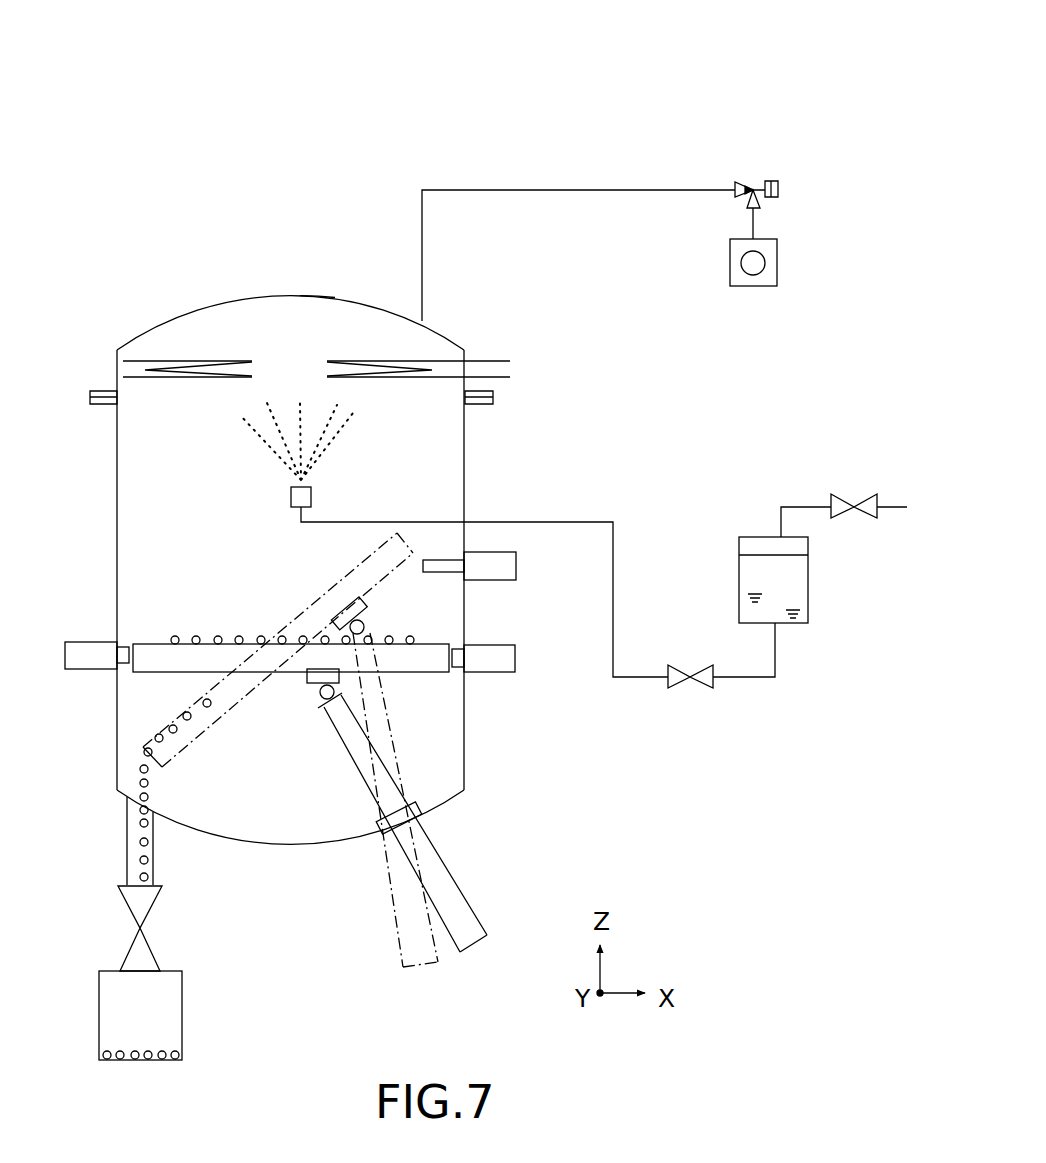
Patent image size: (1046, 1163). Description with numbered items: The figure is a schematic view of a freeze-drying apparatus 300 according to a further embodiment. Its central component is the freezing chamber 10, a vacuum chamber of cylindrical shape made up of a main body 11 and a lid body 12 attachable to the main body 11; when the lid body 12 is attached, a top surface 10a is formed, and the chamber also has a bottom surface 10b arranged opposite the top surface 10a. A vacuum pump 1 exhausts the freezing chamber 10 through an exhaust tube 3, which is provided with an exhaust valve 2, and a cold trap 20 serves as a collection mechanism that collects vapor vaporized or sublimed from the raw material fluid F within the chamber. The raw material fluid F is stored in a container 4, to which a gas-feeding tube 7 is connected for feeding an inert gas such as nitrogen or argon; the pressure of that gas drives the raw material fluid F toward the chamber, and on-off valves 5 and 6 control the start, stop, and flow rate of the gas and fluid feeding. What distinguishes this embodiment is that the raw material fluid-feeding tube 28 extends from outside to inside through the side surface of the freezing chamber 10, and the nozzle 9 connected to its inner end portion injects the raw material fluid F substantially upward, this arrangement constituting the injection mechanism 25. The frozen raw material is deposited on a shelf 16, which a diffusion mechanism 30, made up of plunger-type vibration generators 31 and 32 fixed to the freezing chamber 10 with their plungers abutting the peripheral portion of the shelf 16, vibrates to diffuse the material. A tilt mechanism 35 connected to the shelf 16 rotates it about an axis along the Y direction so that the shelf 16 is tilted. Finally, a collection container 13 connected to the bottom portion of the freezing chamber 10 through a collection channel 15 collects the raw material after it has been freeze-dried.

The freeze-drying apparatus 300 is at (368, 80).
The freezing chamber 10 is at (110, 572).
The top surface 10a is at (250, 296).
The bottom surface 10b is at (273, 844).
The main body 11 is at (117, 608).
The lid body 12 is at (333, 295).
The cold trap 20 is at (480, 352).
The exhaust valve 2 is at (403, 360).
The exhaust tube 3 is at (575, 190).
The vacuum pump 1 is at (737, 287).
The nozzle 9 is at (291, 497).
The injection mechanism 25 is at (362, 481).
The raw material fluid-feeding tube 28 is at (568, 522).
The on-off valve 6 is at (672, 688).
The container 4 is at (805, 588).
The raw material fluid F is at (750, 575).
The gas-feeding tube 7 is at (790, 505).
The on-off valve 5 is at (833, 493).
The diffusion mechanism 30 is at (557, 558).
The vibration generator 32 is at (516, 568).
The vibration generator 31 is at (516, 658).
The shelf 16 is at (143, 670).
The tilt mechanism 35 is at (466, 854).
The collection channel 15 is at (127, 830).
The collection container 13 is at (182, 1015).